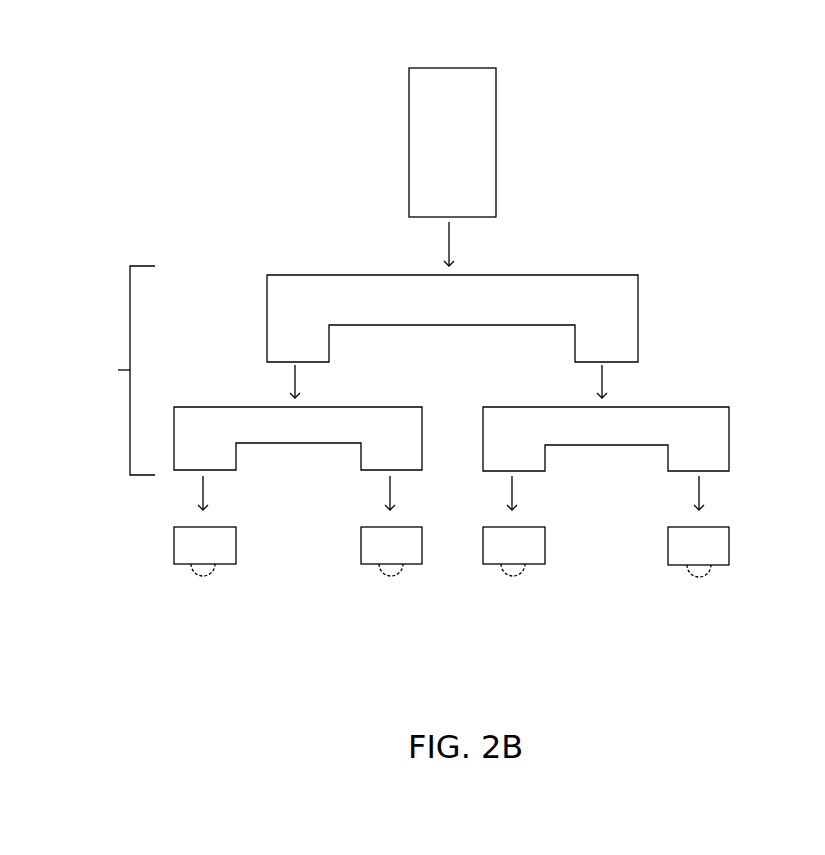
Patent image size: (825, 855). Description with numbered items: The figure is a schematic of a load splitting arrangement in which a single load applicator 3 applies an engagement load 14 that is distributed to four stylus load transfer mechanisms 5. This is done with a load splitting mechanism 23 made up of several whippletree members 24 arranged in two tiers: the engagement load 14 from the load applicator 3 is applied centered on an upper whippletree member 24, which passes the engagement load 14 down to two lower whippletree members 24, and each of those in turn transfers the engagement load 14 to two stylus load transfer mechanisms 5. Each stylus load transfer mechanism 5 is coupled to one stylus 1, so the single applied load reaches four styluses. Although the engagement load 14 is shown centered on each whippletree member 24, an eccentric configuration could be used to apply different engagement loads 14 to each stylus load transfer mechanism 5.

The stylus 1 is at (376, 573).
The load applicator 3 is at (453, 151).
The stylus load transfer mechanism 5 is at (180, 541).
The engagement load 14 is at (453, 240).
The load splitting mechanism 23 is at (117, 370).
The whippletree member 24 is at (321, 410).